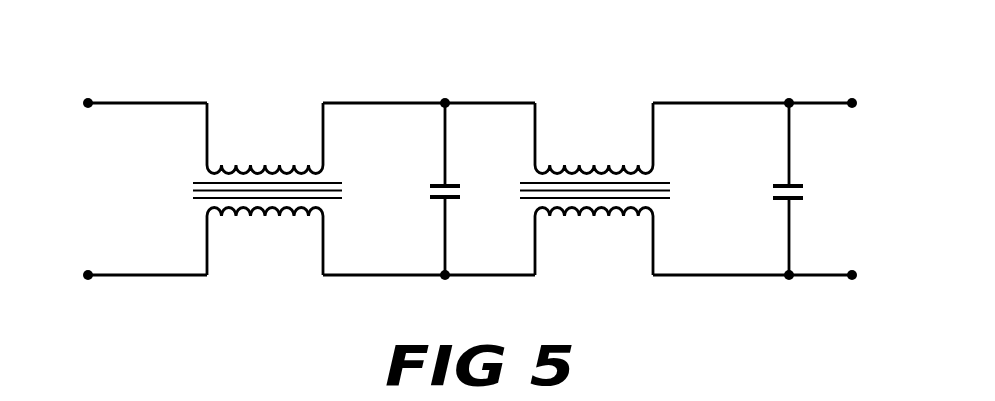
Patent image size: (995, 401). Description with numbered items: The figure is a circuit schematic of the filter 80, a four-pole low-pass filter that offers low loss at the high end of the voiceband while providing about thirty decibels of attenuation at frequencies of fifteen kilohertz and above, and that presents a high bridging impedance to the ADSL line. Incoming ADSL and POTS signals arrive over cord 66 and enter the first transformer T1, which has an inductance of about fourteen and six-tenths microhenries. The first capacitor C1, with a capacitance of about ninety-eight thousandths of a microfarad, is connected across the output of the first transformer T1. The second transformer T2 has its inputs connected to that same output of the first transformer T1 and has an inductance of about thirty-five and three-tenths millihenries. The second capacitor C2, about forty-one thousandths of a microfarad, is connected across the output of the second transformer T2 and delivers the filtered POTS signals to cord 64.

The filter 80 is at (282, 65).
The cord 66 is at (78, 290).
The cord 64 is at (855, 93).
The first transformer T1 is at (280, 189).
The second transformer T2 is at (608, 189).
The first capacitor C1 is at (459, 189).
The second capacitor C2 is at (805, 189).